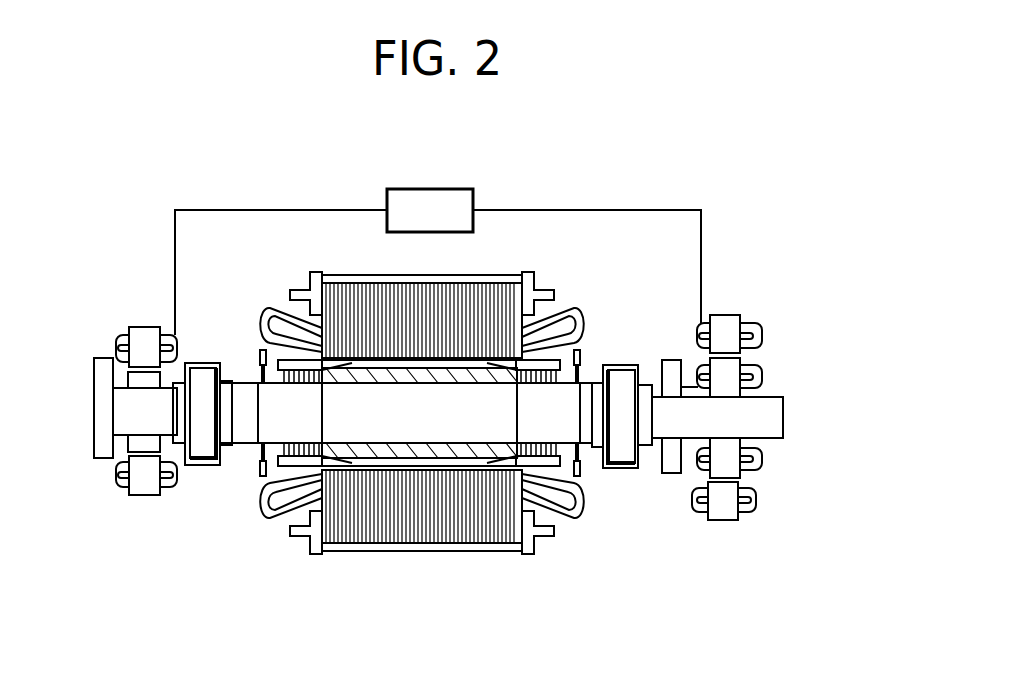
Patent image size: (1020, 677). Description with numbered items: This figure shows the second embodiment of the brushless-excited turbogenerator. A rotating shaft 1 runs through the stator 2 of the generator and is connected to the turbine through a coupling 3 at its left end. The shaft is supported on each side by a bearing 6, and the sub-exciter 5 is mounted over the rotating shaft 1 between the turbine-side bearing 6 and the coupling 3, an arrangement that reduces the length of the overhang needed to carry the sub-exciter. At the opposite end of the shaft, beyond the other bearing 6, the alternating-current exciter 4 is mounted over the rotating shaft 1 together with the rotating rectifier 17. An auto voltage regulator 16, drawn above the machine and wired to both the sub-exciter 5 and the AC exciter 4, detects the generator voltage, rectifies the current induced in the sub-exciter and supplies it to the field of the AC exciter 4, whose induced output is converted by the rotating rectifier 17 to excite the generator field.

The rotating shaft 1 is at (247, 435).
The stator 2 is at (393, 525).
The coupling 3 is at (104, 362).
The alternating-current exciter 4 is at (728, 315).
The sub-exciter 5 is at (137, 497).
The turbine-side bearing 6 is at (205, 455).
The auto voltage regulator 16 is at (450, 189).
The rotating rectifier 17 is at (672, 473).